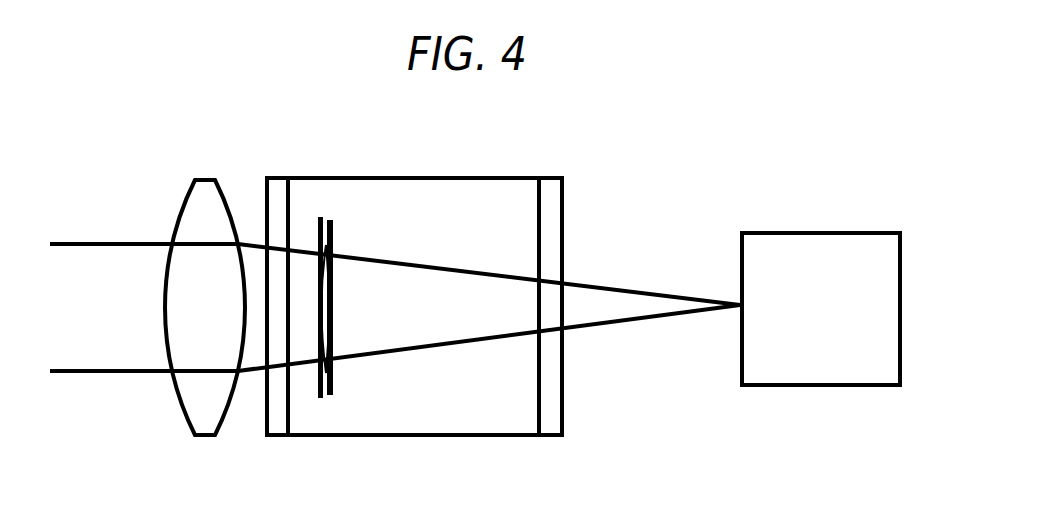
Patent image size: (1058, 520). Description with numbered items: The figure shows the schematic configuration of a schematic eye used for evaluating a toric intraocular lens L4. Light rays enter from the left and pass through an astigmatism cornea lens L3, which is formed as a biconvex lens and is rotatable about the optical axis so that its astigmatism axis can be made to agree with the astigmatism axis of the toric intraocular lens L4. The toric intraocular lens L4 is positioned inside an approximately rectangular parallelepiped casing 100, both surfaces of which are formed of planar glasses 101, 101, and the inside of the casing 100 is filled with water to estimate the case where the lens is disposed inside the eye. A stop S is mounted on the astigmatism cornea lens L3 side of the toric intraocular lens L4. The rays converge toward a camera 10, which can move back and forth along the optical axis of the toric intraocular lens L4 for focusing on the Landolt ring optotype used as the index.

The camera 10 is at (826, 233).
The casing 100 is at (517, 437).
The planar glasses 101 is at (283, 180).
The astigmatism cornea lens L3 is at (185, 412).
The toric intraocular lens L4 is at (333, 278).
The stop S is at (320, 393).